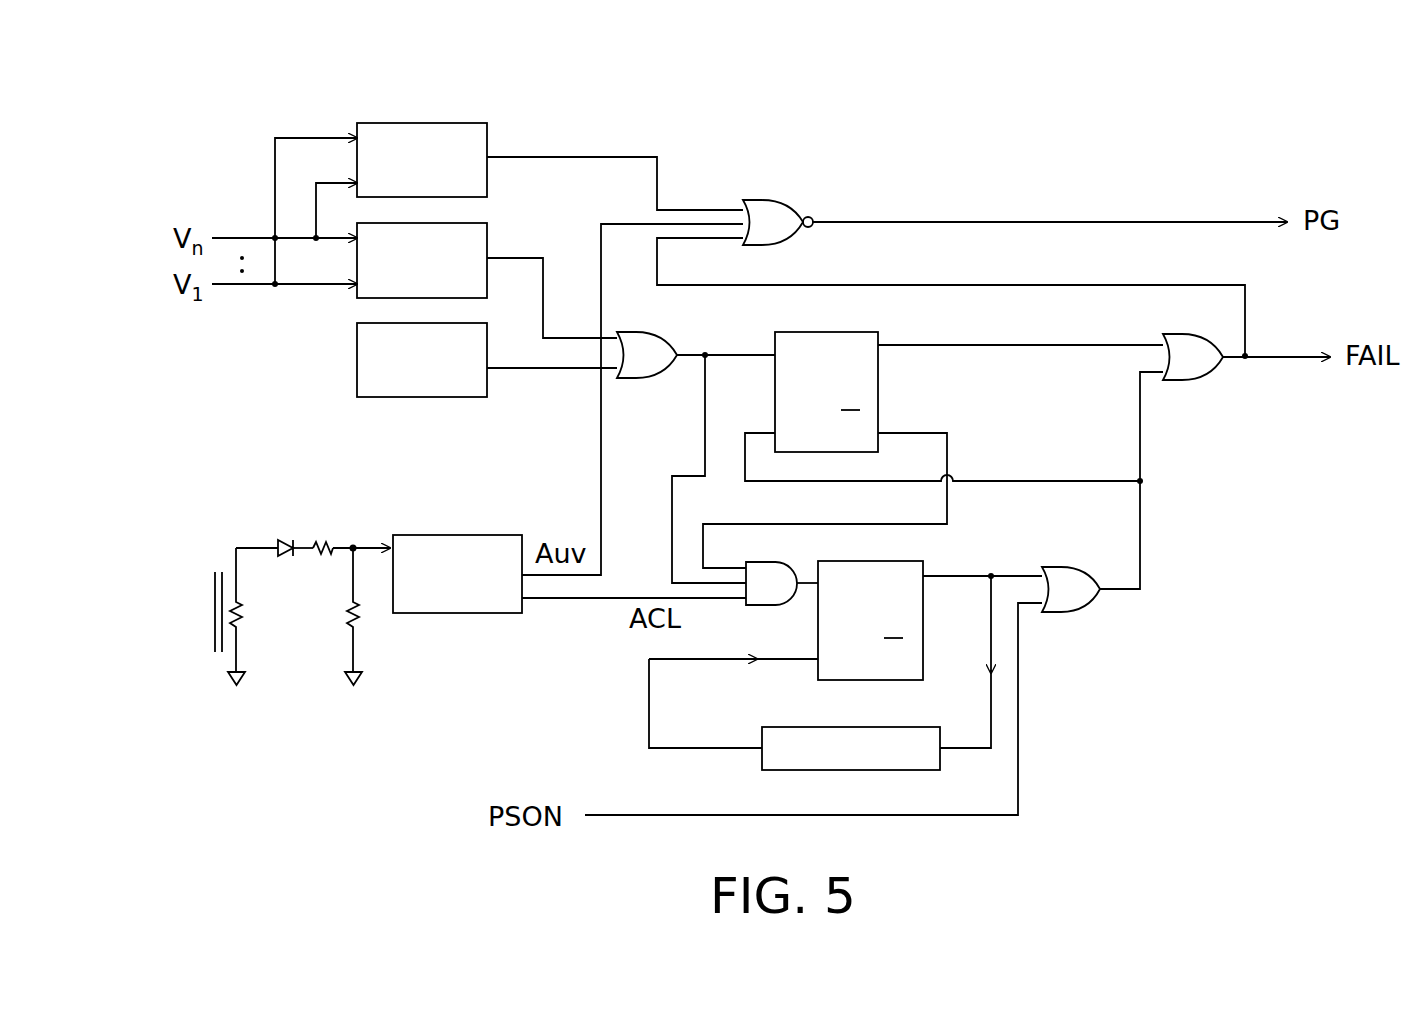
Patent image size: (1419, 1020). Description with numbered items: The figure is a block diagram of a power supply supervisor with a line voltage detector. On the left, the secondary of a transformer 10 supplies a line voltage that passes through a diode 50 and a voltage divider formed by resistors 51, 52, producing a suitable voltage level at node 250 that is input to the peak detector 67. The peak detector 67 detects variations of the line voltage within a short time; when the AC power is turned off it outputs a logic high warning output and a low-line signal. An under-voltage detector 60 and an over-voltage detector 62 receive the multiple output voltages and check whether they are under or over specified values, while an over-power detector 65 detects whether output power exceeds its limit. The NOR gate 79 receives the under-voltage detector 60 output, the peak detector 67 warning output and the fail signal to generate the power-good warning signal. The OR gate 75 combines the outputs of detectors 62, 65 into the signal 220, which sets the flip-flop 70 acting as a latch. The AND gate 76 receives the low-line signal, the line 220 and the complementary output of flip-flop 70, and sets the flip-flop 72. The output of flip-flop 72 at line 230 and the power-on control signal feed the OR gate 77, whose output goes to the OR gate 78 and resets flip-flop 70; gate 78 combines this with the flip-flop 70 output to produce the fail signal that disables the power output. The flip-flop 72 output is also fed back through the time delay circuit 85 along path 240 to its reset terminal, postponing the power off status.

The transformer 10 is at (218, 555).
The diode 50 is at (290, 540).
The resistor 51 is at (325, 540).
The resistor 52 is at (362, 622).
The node 250 is at (358, 545).
The under-voltage detector 60 is at (488, 140).
The over-voltage detector 62 is at (488, 240).
The over-power detector 65 is at (490, 398).
The peak detector 67 is at (470, 614).
The flip-flop 70 is at (880, 388).
The flip-flop 72 is at (917, 557).
The logic gate 75 is at (678, 340).
The logic gate 76 is at (795, 571).
The logic gate 77 is at (1093, 611).
The logic gate 78 is at (1217, 375).
The logic gate 79 is at (793, 200).
The time delay circuit 85 is at (846, 726).
The signal 220 is at (683, 470).
The signal line 230 is at (1007, 570).
The signal line 240 is at (645, 737).